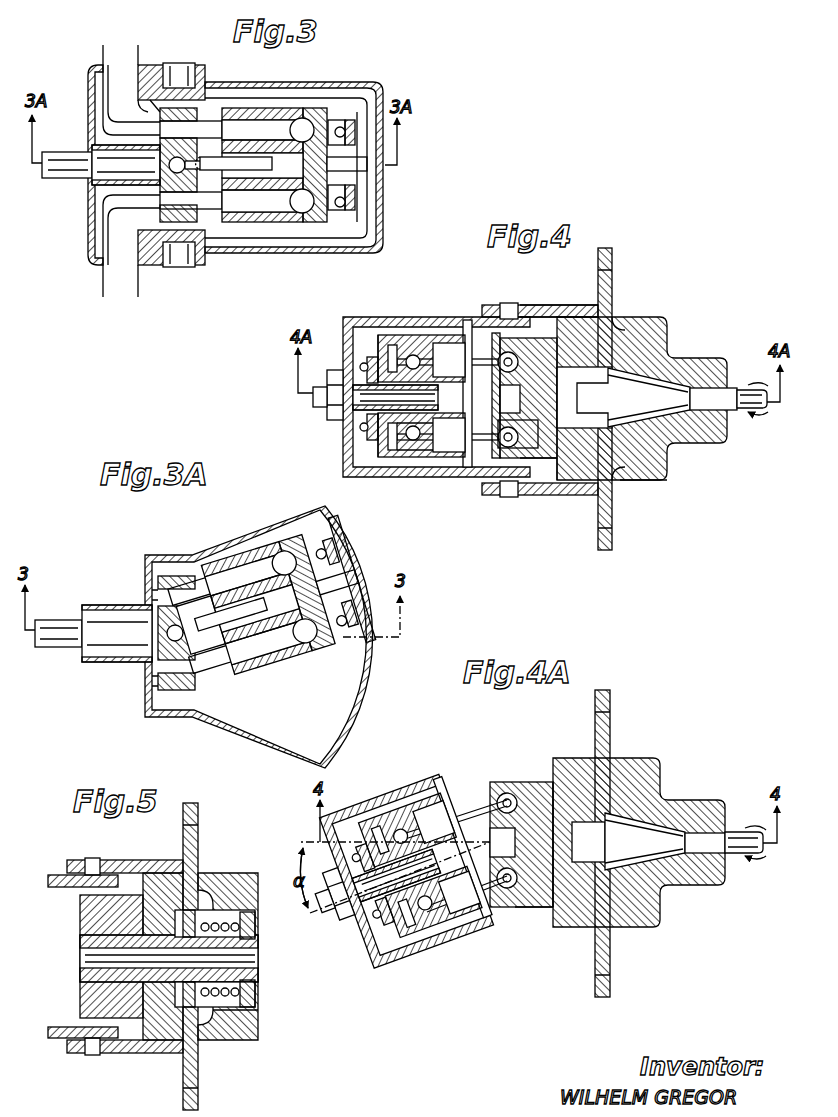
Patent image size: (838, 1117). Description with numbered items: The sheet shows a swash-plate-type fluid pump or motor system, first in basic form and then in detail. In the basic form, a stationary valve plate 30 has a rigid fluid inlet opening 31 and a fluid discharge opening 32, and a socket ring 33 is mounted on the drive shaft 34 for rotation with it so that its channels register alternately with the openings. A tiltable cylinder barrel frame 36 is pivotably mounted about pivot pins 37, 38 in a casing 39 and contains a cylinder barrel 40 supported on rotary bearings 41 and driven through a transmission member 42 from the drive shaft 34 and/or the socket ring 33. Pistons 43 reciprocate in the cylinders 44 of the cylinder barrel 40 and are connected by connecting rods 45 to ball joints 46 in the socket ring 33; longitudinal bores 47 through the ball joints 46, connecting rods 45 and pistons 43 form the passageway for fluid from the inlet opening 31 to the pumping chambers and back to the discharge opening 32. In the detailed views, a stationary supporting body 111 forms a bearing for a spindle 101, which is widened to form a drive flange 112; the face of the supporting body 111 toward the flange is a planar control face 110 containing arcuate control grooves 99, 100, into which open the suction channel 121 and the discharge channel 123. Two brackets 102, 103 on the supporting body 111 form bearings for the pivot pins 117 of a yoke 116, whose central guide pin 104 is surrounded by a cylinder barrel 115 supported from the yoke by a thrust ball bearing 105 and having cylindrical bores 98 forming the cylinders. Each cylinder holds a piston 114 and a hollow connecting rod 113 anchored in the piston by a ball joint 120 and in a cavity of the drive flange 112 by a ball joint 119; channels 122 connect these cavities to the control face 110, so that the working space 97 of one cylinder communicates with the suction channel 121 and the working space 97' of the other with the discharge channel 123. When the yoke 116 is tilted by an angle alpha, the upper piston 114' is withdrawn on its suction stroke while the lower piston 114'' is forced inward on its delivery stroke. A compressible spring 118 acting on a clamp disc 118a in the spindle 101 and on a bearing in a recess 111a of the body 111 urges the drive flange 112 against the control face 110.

In FIG. 3, the stationary valve plate 30 is at (139, 96).
In FIG. 3, the fluid inlet opening 31 is at (146, 118).
In FIG. 3A, the fluid inlet opening 31 is at (153, 600).
In FIG. 3, the fluid discharge opening 32 is at (146, 206).
In FIG. 3A, the fluid discharge opening 32 is at (153, 680).
In FIG. 3, the socket ring 33 is at (197, 110).
In FIG. 3A, the socket ring 33 is at (156, 575).
In FIG. 3, the drive shaft 34 is at (57, 156).
In FIG. 3A, the drive shaft 34 is at (47, 621).
In FIG. 3, the tiltable cylinder barrel frame 36 is at (350, 96).
In FIG. 3A, the tiltable cylinder barrel frame 36 is at (345, 551).
In FIG. 3, the pivot pin 37 is at (176, 72).
In FIG. 3, the pivot pin 38 is at (178, 264).
In FIG. 3, the casing 39 is at (381, 90).
In FIG. 3, the cylinder barrel 40 is at (313, 222).
In FIG. 3A, the cylinder barrel 40 is at (268, 605).
In FIG. 3, the rotary bearings 41 is at (357, 205).
In FIG. 3A, the rotary bearings 41 is at (340, 640).
In FIG. 3, the transmission member 42 is at (169, 165).
In FIG. 3A, the transmission member 42 is at (192, 650).
In FIG. 3, the pistons 43 is at (268, 190).
In FIG. 3A, the pistons 43 is at (249, 560).
In FIG. 3, the cylinders 44 is at (306, 118).
In FIG. 3A, the cylinders 44 is at (224, 566).
In FIG. 3A, the connecting rods 45 is at (193, 569).
In FIG. 3A, the ball joints 46 is at (174, 712).
In FIG. 3, the longitudinal bores 47 is at (212, 209).
In FIG. 3A, the longitudinal bores 47 is at (222, 652).
In FIG. 4, the working space 97 is at (384, 332).
In FIG. 4, the working space 97' is at (373, 460).
In FIG. 4, the cylindrical bores 98 is at (445, 344).
In FIG. 4, the arcuate control groove 99 is at (558, 362).
In FIG. 4, the arcuate control groove 100 is at (583, 416).
In FIG. 4A, the arcuate control groove 100 is at (628, 841).
In FIG. 4, the spindle 101 is at (734, 412).
In FIG. 4A, the spindle 101 is at (708, 855).
In FIG. 4, the bracket 102 is at (527, 306).
In FIG. 5, the bracket 102 is at (130, 866).
In FIG. 4, the bracket 103 is at (601, 492).
In FIG. 4A, the bracket 103 is at (602, 843).
In FIG. 5, the bracket 103 is at (156, 1053).
In FIG. 4, the guide pin 104 is at (343, 420).
In FIG. 4A, the guide pin 104 is at (360, 925).
In FIG. 4, the thrust ball bearing 105 is at (354, 363).
In FIG. 4A, the thrust ball bearing 105 is at (396, 875).
In FIG. 4, the planar control face 110 is at (560, 482).
In FIG. 4A, the planar control face 110 is at (556, 777).
In FIG. 5, the planar control face 110 is at (130, 1053).
In FIG. 4, the stationary supporting body 111 is at (676, 362).
In FIG. 4A, the stationary supporting body 111 is at (678, 800).
In FIG. 5, the stationary supporting body 111 is at (223, 880).
In FIG. 5, the recess 111a is at (226, 1012).
In FIG. 4, the drive flange 112 is at (538, 338).
In FIG. 4A, the drive flange 112 is at (497, 782).
In FIG. 5, the drive flange 112 is at (86, 927).
In FIG. 4, the hollow connecting rod 113 is at (468, 340).
In FIG. 4A, the hollow connecting rod 113 is at (456, 836).
In FIG. 4, the piston 114 is at (414, 367).
In FIG. 4A, the upper piston 114' is at (408, 813).
In FIG. 4A, the lower piston 114'' is at (455, 925).
In FIG. 4, the cylinder barrel 115 is at (364, 360).
In FIG. 4A, the cylinder barrel 115 is at (368, 852).
In FIG. 4, the yoke 116 is at (346, 330).
In FIG. 4A, the yoke 116 is at (334, 843).
In FIG. 4, the pivot pins 117 is at (505, 308).
In FIG. 5, the compressible spring 118 is at (243, 1003).
In FIG. 5, the clamp disc 118a is at (250, 991).
In FIG. 4, the ball joint 119 is at (500, 446).
In FIG. 4A, the ball joint 119 is at (506, 890).
In FIG. 4, the ball joint 120 is at (415, 455).
In FIG. 4A, the ball joint 120 is at (422, 937).
In FIG. 4, the suction channel 121 is at (637, 323).
In FIG. 4, the channels 122 is at (540, 462).
In FIG. 4A, the channels 122 is at (540, 892).
In FIG. 4, the discharge channel 123 is at (640, 478).